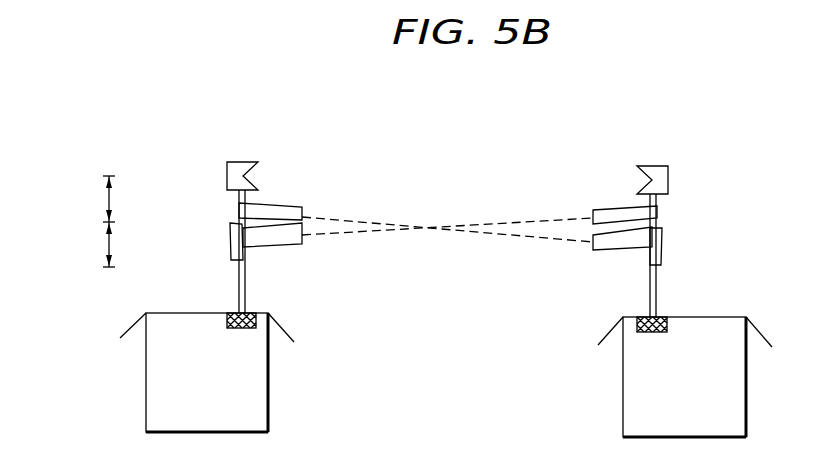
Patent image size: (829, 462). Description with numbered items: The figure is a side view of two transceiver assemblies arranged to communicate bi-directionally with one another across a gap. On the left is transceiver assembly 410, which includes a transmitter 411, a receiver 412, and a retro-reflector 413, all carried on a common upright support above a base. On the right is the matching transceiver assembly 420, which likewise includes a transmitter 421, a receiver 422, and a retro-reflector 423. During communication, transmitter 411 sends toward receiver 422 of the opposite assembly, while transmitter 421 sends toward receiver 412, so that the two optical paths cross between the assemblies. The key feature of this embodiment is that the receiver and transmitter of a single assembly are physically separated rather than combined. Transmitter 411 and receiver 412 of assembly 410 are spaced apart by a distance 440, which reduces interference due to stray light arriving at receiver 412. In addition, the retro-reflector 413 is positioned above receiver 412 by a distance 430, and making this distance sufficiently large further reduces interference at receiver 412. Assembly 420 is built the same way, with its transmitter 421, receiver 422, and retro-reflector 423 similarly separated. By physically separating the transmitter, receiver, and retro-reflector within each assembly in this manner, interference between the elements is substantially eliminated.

The transceiver assembly 410 is at (320, 172).
The transmitter 411 is at (238, 204).
The receiver 412 is at (230, 243).
The retro-reflector 413 is at (245, 161).
The transceiver assembly 420 is at (724, 165).
The transmitter 421 is at (660, 215).
The receiver 422 is at (662, 253).
The retro-reflector 423 is at (654, 165).
The distance 430 is at (108, 197).
The distance 440 is at (108, 243).